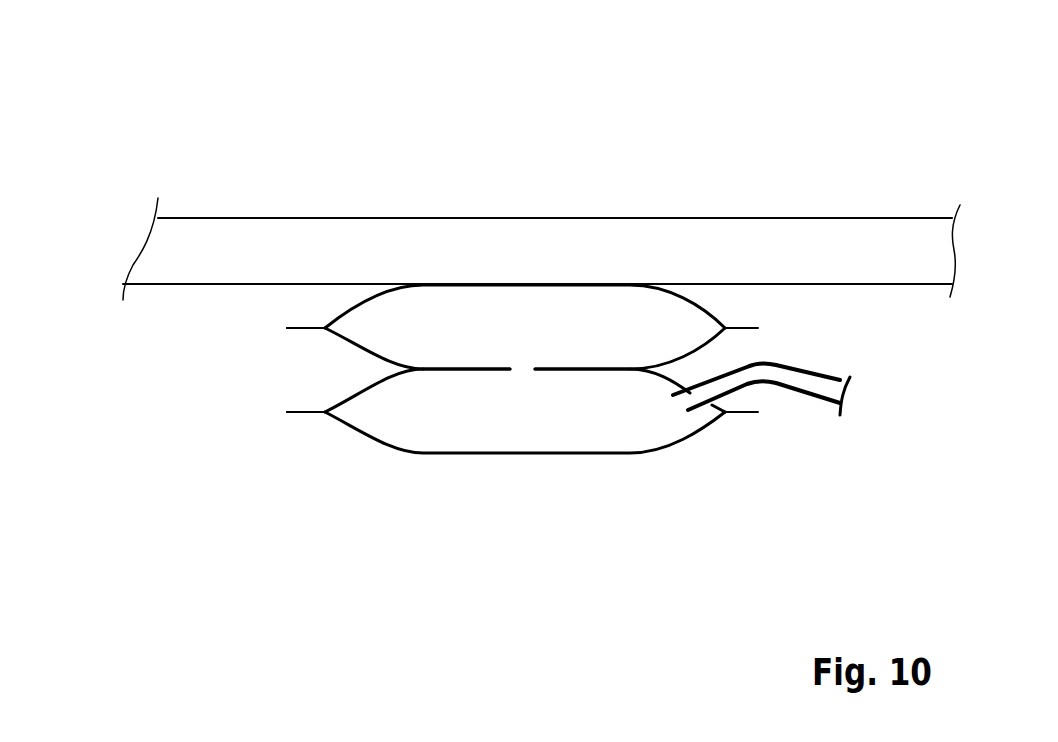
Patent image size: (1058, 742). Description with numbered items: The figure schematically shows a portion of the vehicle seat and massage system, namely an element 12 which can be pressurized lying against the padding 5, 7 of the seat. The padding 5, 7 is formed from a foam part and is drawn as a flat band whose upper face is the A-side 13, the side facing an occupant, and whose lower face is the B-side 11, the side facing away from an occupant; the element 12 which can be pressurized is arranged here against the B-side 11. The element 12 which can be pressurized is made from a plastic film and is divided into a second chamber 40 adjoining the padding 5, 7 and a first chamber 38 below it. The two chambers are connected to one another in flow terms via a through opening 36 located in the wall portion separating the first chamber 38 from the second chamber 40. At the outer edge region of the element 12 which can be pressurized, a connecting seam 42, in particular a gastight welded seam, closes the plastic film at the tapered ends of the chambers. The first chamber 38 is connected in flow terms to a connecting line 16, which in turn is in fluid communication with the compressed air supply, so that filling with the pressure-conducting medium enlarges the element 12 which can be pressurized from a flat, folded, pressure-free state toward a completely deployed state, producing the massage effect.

The element which can be pressurized 12 is at (148, 107).
The padding 5 is at (790, 243).
The padding 7 is at (537, 186).
The A-side 13 is at (233, 216).
The B-side 11 is at (175, 284).
The second chamber 40 is at (500, 298).
The through opening 36 is at (525, 368).
The first chamber 38 is at (483, 430).
The connecting seam 42 is at (303, 330).
The connecting line 16 is at (818, 388).